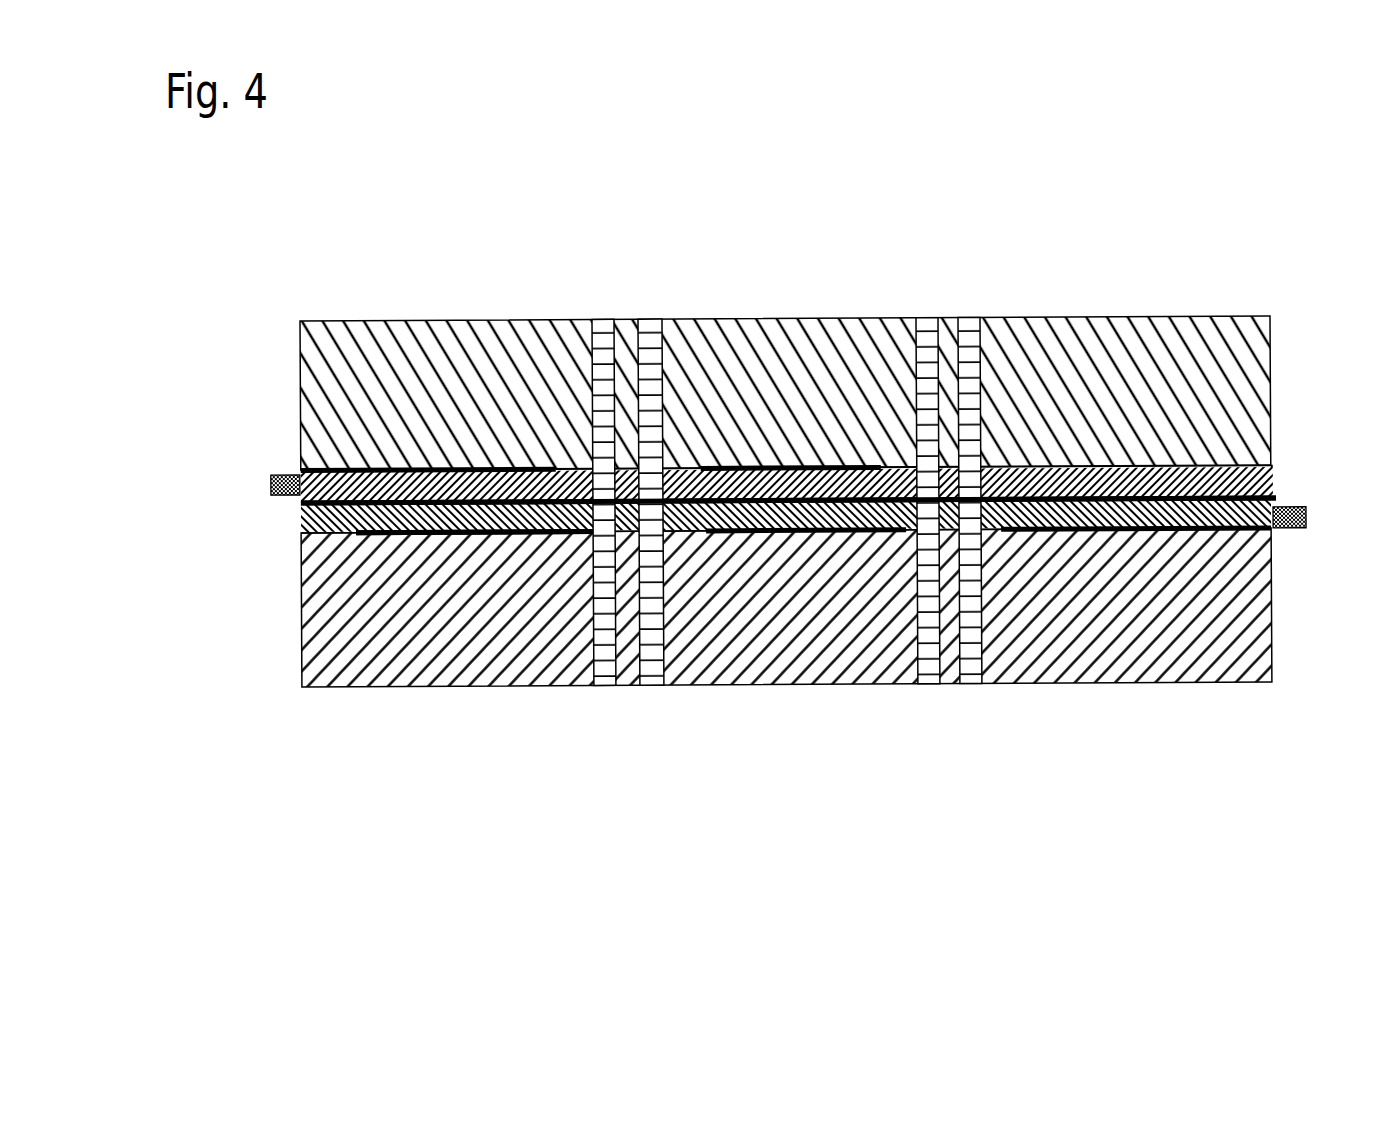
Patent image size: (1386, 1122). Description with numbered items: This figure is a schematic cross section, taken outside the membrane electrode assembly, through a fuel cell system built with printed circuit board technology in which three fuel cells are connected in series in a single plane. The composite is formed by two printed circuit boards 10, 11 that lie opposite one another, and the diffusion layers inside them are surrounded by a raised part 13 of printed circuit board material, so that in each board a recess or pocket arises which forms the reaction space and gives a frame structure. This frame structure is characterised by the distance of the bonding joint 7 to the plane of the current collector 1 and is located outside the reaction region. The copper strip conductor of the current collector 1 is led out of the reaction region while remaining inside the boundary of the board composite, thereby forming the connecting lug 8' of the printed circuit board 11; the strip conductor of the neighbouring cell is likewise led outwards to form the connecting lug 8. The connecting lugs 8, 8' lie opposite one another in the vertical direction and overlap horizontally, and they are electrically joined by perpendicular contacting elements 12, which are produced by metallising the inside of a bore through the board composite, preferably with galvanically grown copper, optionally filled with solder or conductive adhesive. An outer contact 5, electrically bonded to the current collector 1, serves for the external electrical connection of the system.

The current collector 1 is at (515, 538).
The outer contact 5 is at (1288, 514).
The bonding joint 7 is at (330, 505).
The connecting lug 8 is at (619, 400).
The connecting lug 8' is at (622, 592).
The printed circuit board 10 is at (405, 400).
The printed circuit board 11 is at (408, 628).
The contacting element 12 is at (963, 598).
The raised part 13 is at (1248, 510).